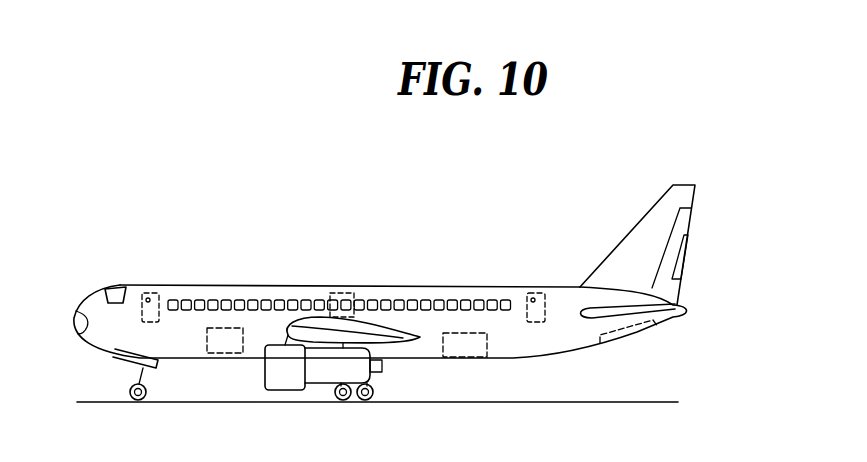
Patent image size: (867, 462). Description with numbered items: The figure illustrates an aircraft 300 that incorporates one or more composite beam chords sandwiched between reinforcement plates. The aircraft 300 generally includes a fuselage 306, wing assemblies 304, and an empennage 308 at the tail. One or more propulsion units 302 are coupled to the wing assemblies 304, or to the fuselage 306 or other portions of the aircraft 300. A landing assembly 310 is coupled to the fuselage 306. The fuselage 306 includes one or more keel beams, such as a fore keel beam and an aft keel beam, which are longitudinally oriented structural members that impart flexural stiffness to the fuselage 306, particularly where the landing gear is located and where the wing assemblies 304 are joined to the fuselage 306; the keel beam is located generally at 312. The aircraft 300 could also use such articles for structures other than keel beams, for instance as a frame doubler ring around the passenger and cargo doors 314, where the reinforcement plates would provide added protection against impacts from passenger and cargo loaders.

The aircraft 300 is at (200, 172).
The propulsion unit 302 is at (323, 384).
The wing assembly 304 is at (400, 343).
The fuselage 306 is at (371, 287).
The empennage 308 is at (700, 285).
The landing assembly 310 is at (133, 399).
The keel beam location 312 is at (203, 362).
The passenger and cargo doors 314 is at (153, 297).